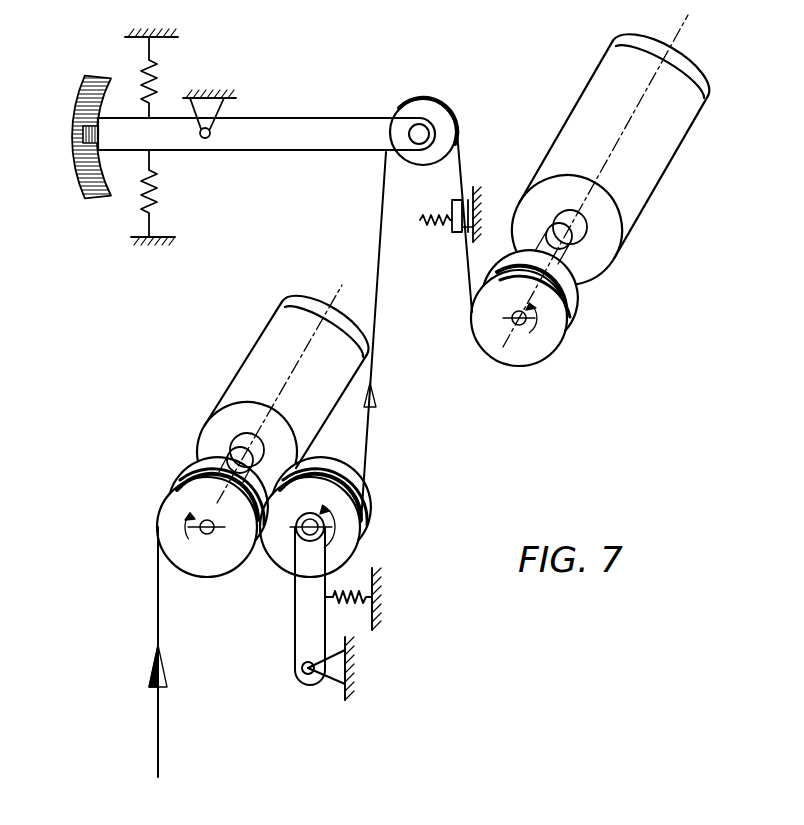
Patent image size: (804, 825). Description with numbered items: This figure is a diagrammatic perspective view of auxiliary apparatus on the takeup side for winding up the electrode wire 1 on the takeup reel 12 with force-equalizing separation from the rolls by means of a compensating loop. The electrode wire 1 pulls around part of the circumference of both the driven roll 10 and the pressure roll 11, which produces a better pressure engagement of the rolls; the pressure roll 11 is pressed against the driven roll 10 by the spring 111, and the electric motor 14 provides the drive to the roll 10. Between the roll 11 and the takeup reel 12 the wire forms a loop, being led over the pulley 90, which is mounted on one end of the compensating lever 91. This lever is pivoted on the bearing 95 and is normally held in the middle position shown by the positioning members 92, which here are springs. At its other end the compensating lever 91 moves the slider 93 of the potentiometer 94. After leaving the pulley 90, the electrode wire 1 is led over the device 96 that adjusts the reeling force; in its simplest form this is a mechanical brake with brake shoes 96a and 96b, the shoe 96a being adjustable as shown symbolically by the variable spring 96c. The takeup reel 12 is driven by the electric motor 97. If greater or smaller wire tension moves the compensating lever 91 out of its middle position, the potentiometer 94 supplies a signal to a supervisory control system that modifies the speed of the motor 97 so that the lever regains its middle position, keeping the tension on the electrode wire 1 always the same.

The electrode wire 1 is at (460, 160).
The driven roll 10 is at (172, 500).
The pressure roll 11 is at (318, 483).
The takeup reel 12 is at (540, 355).
The electric motor 14 is at (250, 365).
The pulley 90 is at (425, 110).
The compensating lever 91 is at (285, 140).
The positioning members 92 is at (160, 73).
The slider 93 is at (77, 127).
The potentiometer 94 is at (83, 170).
The bearing 95 is at (208, 137).
The device adjusting the reeling force 96 is at (422, 192).
The brake shoe 96a is at (453, 233).
The brake shoe 96b is at (472, 245).
The variable spring 96c is at (418, 233).
The electric motor 97 is at (683, 112).
The spring 111 is at (348, 588).